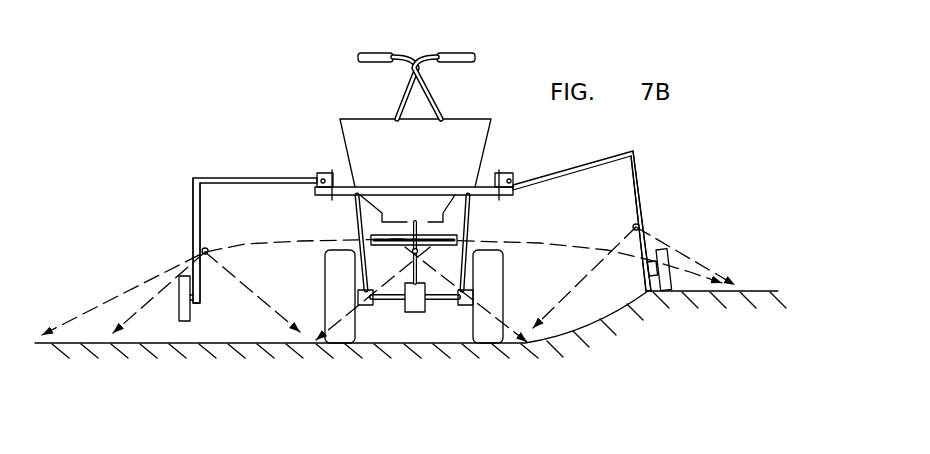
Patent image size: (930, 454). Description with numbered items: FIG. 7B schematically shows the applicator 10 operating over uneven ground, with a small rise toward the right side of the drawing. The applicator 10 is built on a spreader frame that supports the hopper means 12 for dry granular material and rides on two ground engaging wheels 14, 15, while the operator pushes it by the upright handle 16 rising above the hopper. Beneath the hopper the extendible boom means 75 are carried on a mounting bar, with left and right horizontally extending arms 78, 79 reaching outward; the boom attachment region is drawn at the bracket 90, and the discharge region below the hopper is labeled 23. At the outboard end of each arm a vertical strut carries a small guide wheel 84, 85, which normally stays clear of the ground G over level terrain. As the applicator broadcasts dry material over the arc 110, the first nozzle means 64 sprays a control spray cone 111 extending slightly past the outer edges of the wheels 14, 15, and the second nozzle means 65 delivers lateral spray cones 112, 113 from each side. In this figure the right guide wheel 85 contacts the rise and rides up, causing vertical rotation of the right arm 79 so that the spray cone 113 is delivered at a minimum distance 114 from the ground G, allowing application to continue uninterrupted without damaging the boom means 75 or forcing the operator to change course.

The applicator 10 is at (393, 197).
The hopper means 12 is at (473, 121).
The ground engaging wheel 14 is at (339, 260).
The ground engaging wheel 15 is at (494, 258).
The upright handle 16 is at (397, 101).
The discharge spout and agitator rod 23 is at (432, 226).
The first nozzle means 64 is at (412, 244).
The second nozzle means 65 is at (208, 247).
The extendible boom means 75 is at (266, 176).
The left arm 78 is at (228, 178).
The right arm 79 is at (618, 153).
The wheel 84 is at (185, 290).
The wheel 85 is at (666, 250).
The hinge bracket 90 is at (323, 172).
The arc 110 is at (271, 243).
The control spray cone 111 is at (340, 316).
The lateral spray cone 112 is at (128, 323).
The lateral spray cone 113 is at (698, 264).
The minimum distance 114 is at (638, 240).
The ground G is at (757, 291).